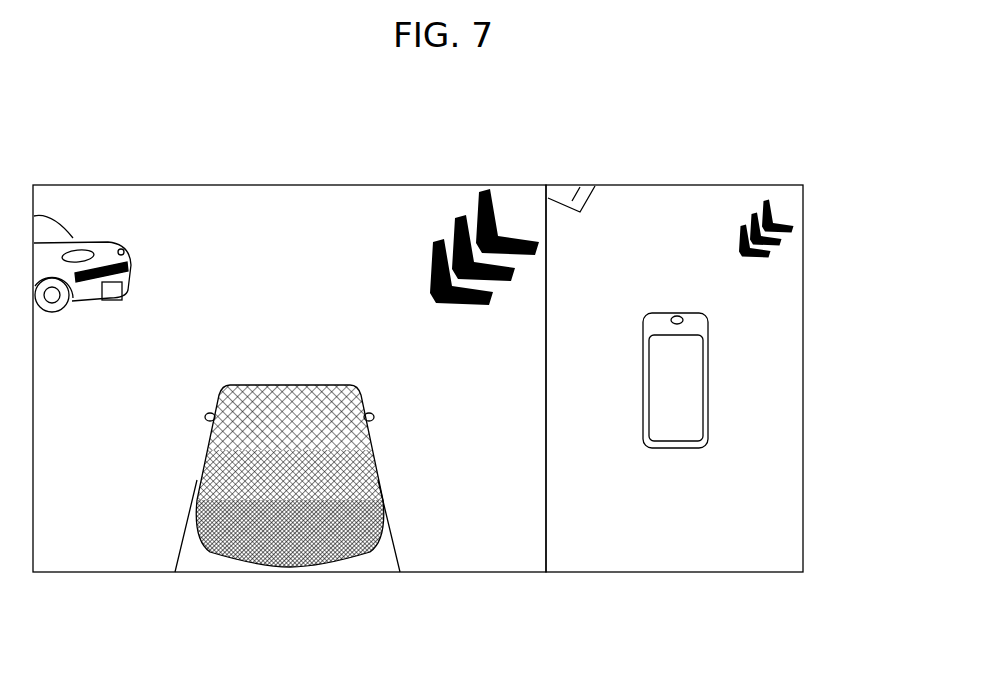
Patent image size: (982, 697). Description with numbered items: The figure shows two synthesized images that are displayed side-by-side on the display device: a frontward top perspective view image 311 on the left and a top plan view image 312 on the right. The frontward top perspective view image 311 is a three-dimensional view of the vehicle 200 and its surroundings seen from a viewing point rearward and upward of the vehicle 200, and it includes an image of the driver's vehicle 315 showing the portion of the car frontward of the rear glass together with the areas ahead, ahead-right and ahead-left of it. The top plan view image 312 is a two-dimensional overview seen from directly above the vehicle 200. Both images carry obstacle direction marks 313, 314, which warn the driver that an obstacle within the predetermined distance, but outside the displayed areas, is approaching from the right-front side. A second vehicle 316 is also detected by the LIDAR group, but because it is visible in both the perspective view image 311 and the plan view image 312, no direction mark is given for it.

The frontward top perspective view image 311 is at (33, 588).
The top plan view image 312 is at (546, 595).
The obstacle direction mark 313 is at (513, 237).
The obstacle direction mark 314 is at (775, 210).
The driver's vehicle 315 is at (479, 346).
The vehicle 200 is at (323, 418).
The vehicle 316 is at (102, 246).